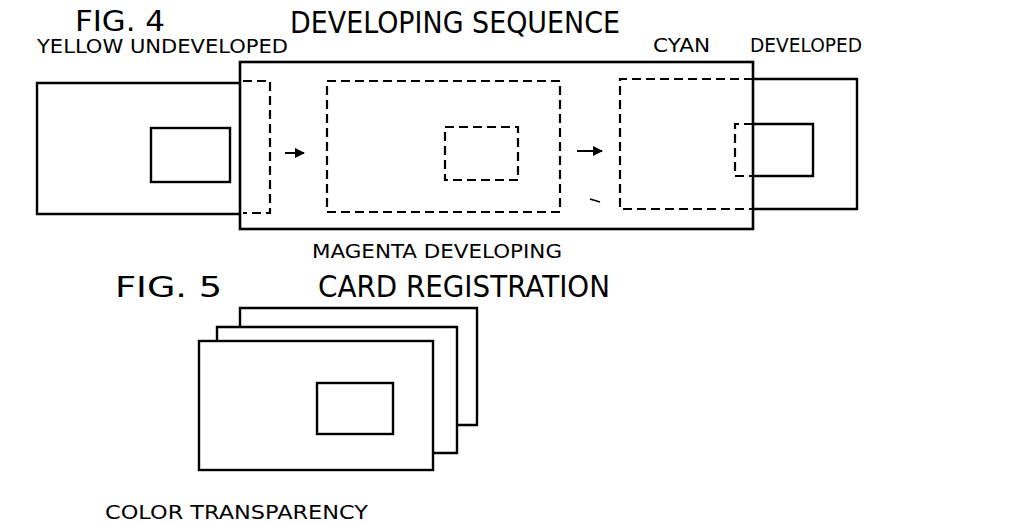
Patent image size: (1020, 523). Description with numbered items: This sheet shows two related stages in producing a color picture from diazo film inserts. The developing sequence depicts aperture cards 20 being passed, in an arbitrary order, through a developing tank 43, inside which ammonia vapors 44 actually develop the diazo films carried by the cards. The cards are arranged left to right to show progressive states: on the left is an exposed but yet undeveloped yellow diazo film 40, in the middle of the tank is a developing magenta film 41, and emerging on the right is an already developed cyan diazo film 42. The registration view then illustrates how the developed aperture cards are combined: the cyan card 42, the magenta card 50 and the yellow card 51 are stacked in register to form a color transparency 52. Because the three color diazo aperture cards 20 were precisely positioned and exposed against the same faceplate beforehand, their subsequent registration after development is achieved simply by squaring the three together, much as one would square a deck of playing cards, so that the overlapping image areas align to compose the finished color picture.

In FIG. 4, the aperture card 20 is at (55, 198).
In FIG. 4, the undeveloped yellow diazo film 40 is at (179, 148).
In FIG. 4, the developing magenta film 41 is at (425, 235).
In FIG. 4, the developed cyan diazo film 42 is at (778, 141).
In FIG. 5, the developed cyan diazo film 42 is at (479, 350).
In FIG. 4, the developing tank 43 is at (710, 228).
In FIG. 4, the ammonia vapors 44 is at (593, 200).
In FIG. 5, the magenta aperture card 50 is at (457, 387).
In FIG. 5, the yellow aperture card 51 is at (434, 420).
In FIG. 5, the color transparency 52 is at (351, 415).